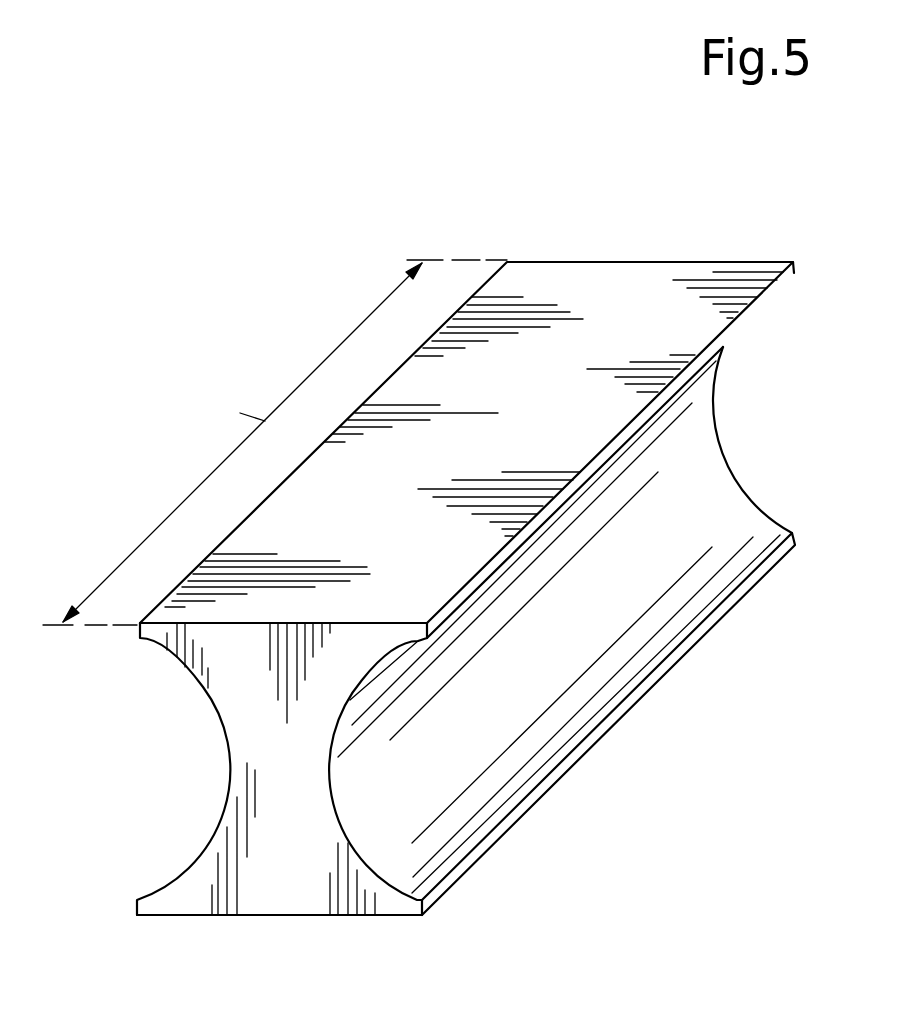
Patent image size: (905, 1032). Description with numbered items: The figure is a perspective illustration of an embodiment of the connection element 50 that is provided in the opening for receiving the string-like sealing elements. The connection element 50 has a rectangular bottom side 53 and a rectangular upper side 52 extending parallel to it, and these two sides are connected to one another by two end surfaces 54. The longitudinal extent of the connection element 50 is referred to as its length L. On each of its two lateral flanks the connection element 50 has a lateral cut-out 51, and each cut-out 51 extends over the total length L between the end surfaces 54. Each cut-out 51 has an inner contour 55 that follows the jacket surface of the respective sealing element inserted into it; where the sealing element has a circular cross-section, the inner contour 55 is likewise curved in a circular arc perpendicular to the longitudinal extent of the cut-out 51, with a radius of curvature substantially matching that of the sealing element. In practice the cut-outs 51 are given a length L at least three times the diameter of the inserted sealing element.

The connection element 50 is at (610, 198).
The lateral cut-out 51 is at (183, 762).
The upper side 52 is at (533, 288).
The bottom side 53 is at (385, 917).
The end surface 54 is at (718, 425).
The inner contour 55 is at (203, 687).